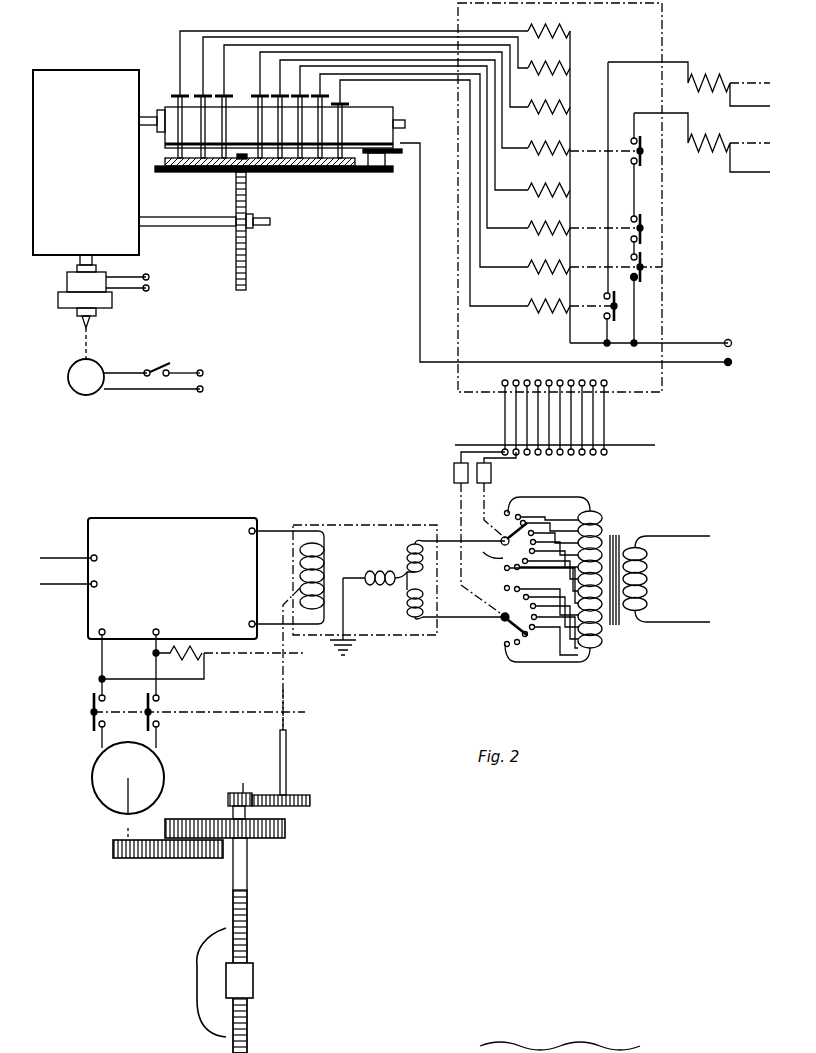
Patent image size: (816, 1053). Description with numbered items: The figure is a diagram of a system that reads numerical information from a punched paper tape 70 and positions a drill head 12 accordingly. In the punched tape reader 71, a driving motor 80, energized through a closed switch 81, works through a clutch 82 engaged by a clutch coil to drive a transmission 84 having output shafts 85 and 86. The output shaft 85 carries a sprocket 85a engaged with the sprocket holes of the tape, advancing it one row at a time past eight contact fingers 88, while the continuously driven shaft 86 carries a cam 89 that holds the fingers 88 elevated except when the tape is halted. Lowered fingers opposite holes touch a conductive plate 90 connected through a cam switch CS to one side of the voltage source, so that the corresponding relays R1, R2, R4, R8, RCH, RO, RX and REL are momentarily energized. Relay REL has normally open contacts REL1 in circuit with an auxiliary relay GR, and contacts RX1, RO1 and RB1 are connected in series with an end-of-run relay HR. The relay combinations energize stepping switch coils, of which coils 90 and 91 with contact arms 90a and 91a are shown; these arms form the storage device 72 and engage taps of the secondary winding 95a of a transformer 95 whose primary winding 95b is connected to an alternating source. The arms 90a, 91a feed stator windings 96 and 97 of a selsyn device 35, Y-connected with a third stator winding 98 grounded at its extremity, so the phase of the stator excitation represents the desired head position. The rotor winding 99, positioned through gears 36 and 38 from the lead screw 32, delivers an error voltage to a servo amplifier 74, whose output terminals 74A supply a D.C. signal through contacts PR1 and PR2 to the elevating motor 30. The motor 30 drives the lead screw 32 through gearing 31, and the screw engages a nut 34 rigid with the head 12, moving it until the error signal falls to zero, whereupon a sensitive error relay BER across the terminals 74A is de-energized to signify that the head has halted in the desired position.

The drill head 12 is at (210, 970).
The elevating motor 30 is at (100, 790).
The gearing 31 is at (177, 868).
The vertical lead screw 32 is at (247, 912).
The nut 34 is at (253, 978).
The selsyn device 35 is at (380, 523).
The gear 36 is at (225, 803).
The gear 38 is at (306, 795).
The punched paper tape 70 is at (165, 161).
The punched tape reader 71 is at (271, 25).
The storage device 72 is at (439, 431).
The servo amplifier 74 is at (233, 518).
The output terminals 74A is at (140, 616).
The driving motor 80 is at (68, 380).
The switch 81 is at (158, 364).
The clutch 82 is at (75, 302).
The transmission 84 is at (118, 72).
The output shaft 85 is at (182, 226).
The sprocket 85a is at (248, 252).
The output shaft 86 is at (155, 117).
The contact fingers 88 is at (348, 109).
The cam 89 is at (388, 114).
The conductive plate 90 is at (370, 172).
The contact arm 90a is at (506, 622).
The stepping switch coil 91 is at (461, 487).
The contact arm 91a is at (526, 557).
The transformer 95 is at (628, 591).
The secondary winding 95a is at (600, 645).
The primary winding 95b is at (650, 592).
The stator winding 96 is at (414, 546).
The stator winding 97 is at (414, 616).
The stator winding 98 is at (380, 586).
The rotor winding 99 is at (322, 569).
The relay R1 is at (570, 33).
The relay R2 is at (570, 70).
The relay R4 is at (570, 109).
The relay R8 is at (570, 150).
The relay RCH is at (538, 186).
The relay RO is at (535, 224).
The relay RX is at (535, 263).
The relay REL is at (536, 302).
The normally open contacts RB1 is at (650, 163).
The normally open contacts RO1 is at (650, 218).
The normally open contacts RX1 is at (653, 278).
The normally open contacts REL1 is at (628, 314).
The auxiliary relay GR is at (714, 80).
The end-of-run relay HR is at (714, 141).
The cam switch CS is at (387, 168).
The sensitive error relay BER is at (198, 650).
The normally open relay contacts PR1 is at (85, 714).
The normally open relay contacts PR2 is at (176, 706).